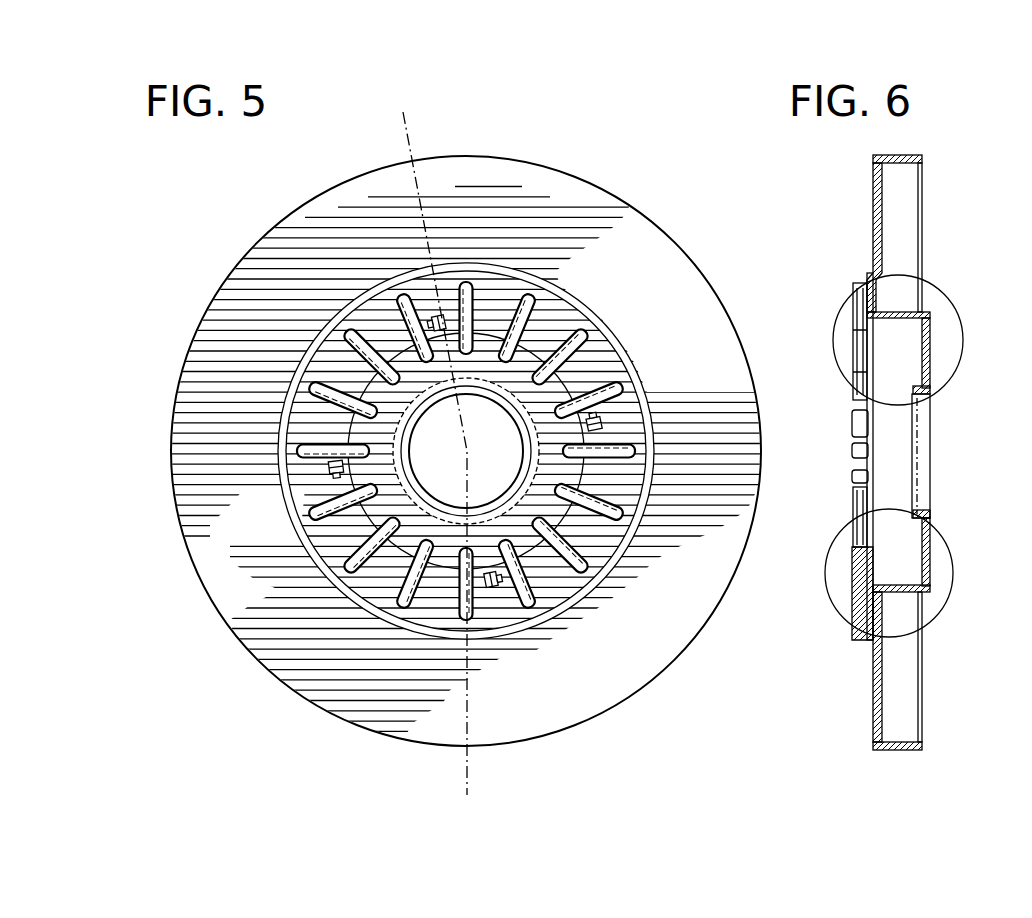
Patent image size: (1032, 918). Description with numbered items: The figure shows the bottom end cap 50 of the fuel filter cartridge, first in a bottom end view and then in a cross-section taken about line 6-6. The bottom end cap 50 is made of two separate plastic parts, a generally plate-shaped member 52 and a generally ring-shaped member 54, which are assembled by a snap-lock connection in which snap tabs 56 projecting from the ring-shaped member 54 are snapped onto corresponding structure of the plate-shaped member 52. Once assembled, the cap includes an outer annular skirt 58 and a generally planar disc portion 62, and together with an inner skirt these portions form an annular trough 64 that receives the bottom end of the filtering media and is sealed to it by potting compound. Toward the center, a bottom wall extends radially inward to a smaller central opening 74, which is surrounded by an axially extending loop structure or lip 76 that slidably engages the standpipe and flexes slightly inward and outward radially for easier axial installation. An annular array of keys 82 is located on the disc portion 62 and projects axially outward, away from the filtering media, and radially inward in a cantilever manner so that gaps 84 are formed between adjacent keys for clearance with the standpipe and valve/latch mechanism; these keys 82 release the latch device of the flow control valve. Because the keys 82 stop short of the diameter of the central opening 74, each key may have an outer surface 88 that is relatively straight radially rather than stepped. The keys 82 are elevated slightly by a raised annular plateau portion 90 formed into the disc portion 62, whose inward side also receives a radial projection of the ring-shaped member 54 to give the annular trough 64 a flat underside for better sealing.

In FIG. 5, the bottom end cap 50 is at (198, 257).
In FIG. 6, the bottom end cap 50 is at (873, 215).
In FIG. 5, the plate-shaped member 52 is at (458, 172).
In FIG. 6, the ring-shaped member 54 is at (932, 333).
In FIG. 5, the snap tabs 56 is at (328, 466).
In FIG. 6, the snap tabs 56 is at (856, 318).
In FIG. 5, the outer annular skirt 58 is at (608, 183).
In FIG. 5, the disc portion 62 is at (232, 542).
In FIG. 6, the annular trough 64 is at (912, 220).
In FIG. 5, the central opening 74 is at (430, 488).
In FIG. 6, the central opening 74 is at (920, 465).
In FIG. 5, the lip 76 is at (423, 515).
In FIG. 6, the lip 76 is at (922, 420).
In FIG. 5, the keys 82 is at (503, 598).
In FIG. 5, the gaps 84 is at (605, 423).
In FIG. 6, the outer surface 88 is at (853, 600).
In FIG. 5, the raised annular plateau portion 90 is at (557, 323).
In FIG. 5, the line 6- 6 is at (403, 116).